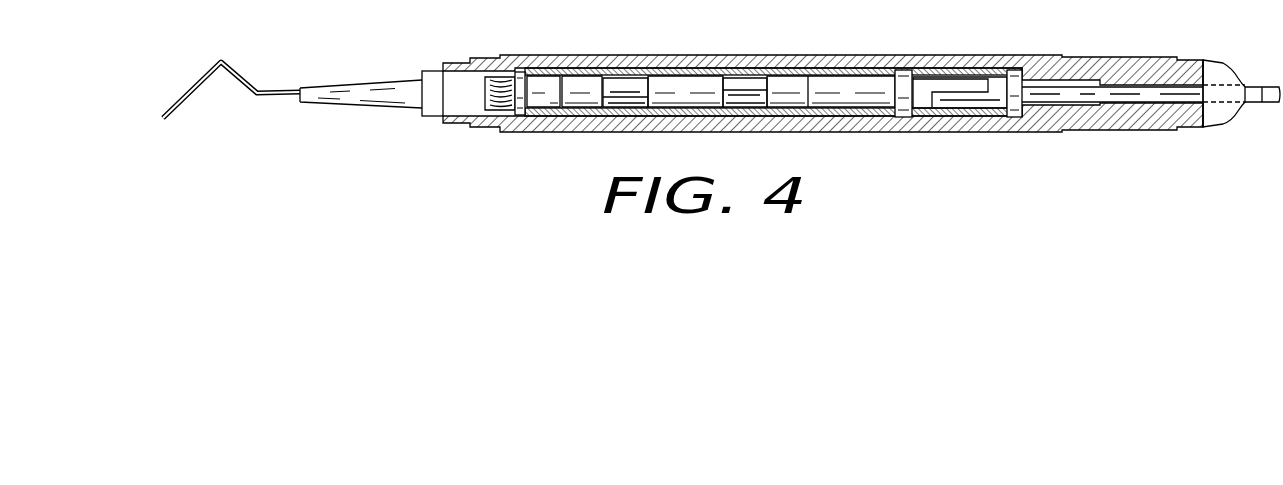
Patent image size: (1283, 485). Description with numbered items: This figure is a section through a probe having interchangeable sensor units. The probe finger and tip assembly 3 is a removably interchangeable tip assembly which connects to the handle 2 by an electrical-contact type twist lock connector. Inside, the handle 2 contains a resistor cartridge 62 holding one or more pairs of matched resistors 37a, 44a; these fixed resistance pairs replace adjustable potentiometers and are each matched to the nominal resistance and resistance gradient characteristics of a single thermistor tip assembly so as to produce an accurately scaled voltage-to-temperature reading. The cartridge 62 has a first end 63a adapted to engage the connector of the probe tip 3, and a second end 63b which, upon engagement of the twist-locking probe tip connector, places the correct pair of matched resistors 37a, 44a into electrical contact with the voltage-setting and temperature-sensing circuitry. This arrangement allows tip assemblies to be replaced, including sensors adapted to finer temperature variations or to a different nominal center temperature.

The handle 2 is at (862, 56).
The probe finger and tip assembly 3 is at (366, 82).
The fixed resistance resistor 37a is at (617, 84).
The fixed resistance resistor 44a is at (737, 92).
The resistor cartridge 62 is at (670, 70).
The first end 63a is at (523, 92).
The second end 63b is at (905, 88).